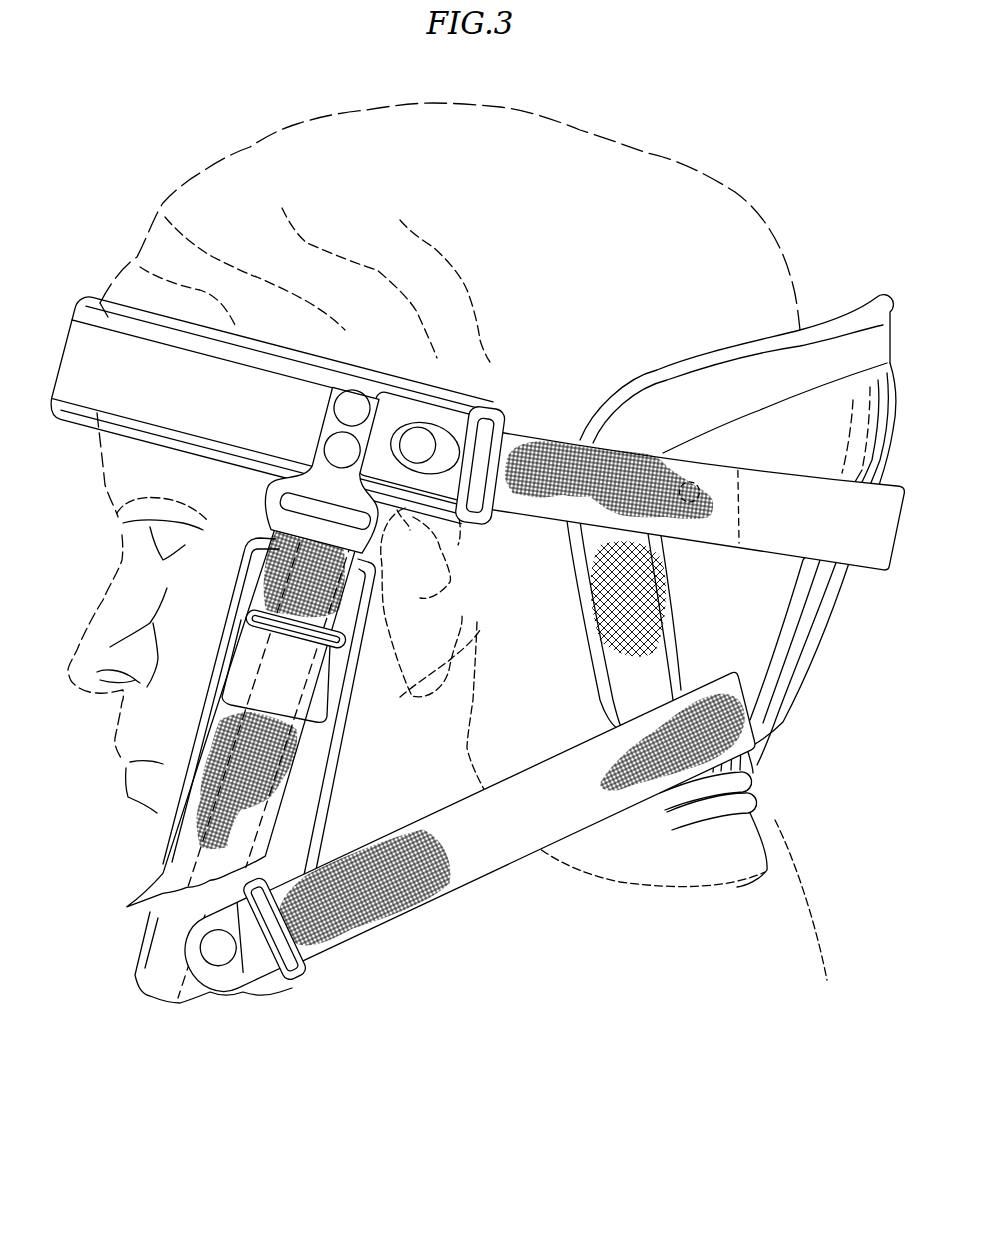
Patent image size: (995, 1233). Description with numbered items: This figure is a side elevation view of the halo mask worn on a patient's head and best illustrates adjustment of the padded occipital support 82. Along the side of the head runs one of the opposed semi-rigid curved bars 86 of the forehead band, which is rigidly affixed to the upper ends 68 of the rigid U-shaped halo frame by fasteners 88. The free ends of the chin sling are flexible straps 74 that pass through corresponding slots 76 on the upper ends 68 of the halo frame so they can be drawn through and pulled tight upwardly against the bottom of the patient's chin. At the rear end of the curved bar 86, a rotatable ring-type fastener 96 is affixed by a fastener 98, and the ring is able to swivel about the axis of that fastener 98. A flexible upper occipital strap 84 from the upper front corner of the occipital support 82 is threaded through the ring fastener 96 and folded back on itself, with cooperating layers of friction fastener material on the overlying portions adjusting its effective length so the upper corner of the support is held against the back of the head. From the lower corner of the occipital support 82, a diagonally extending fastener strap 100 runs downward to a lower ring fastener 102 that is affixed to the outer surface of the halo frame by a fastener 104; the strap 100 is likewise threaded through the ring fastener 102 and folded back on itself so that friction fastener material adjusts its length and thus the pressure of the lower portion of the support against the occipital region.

The upper ends of the U-shaped halo frame 68 is at (288, 582).
The flexible straps 74 is at (287, 765).
The slots 76 is at (286, 503).
The occipital support 82 is at (777, 635).
The upper occipital straps 84 is at (546, 475).
The curved bars 86 is at (179, 397).
The fasteners 88 is at (350, 408).
The rotatable ring-type fasteners 96 is at (487, 422).
The fasteners 98 is at (418, 445).
The diagonally extending fastener straps 100 is at (412, 882).
The lower ring fasteners 102 is at (292, 968).
The fasteners 104 is at (220, 960).